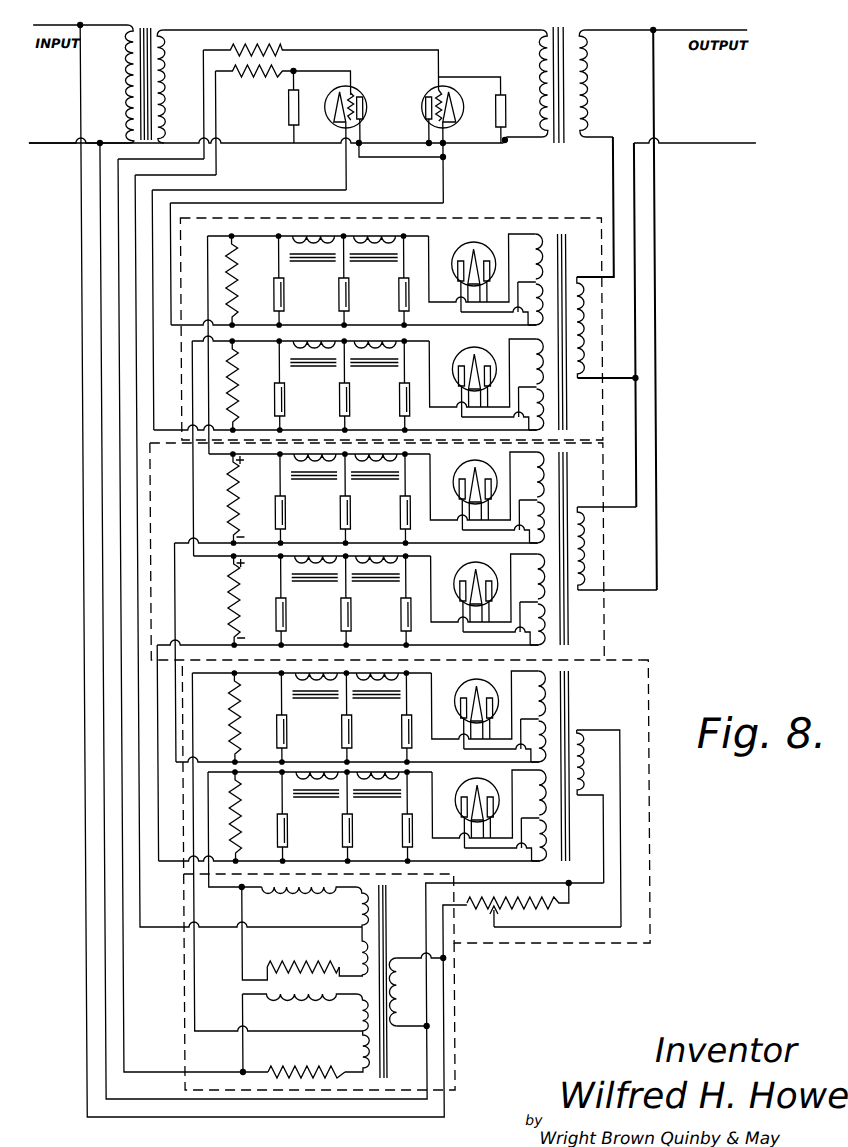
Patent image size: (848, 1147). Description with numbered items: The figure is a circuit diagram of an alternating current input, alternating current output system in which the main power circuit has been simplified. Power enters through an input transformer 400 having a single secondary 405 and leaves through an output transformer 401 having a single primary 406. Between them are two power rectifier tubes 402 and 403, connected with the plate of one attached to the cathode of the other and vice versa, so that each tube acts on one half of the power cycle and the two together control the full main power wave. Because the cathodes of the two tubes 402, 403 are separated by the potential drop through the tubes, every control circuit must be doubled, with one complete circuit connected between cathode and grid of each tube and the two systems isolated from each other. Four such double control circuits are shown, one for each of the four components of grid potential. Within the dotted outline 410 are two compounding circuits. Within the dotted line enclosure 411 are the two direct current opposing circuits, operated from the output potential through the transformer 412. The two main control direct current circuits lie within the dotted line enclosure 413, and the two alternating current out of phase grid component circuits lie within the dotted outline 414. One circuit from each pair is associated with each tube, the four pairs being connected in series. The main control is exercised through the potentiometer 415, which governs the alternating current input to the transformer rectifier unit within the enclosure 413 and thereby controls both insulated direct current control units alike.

The input transformer 400 is at (121, 58).
The output transformer 401 is at (568, 80).
The power rectifier tube 402 is at (352, 95).
The power rectifier tube 403 is at (425, 118).
The secondary 405 is at (167, 117).
The primary 406 is at (532, 56).
The dotted outline 410 is at (510, 216).
The dotted line enclosure 411 is at (436, 531).
The transformer 412 is at (588, 537).
The dotted line enclosure 413 is at (641, 658).
The dotted outline 414 is at (403, 982).
The potentiometer 415 is at (511, 909).